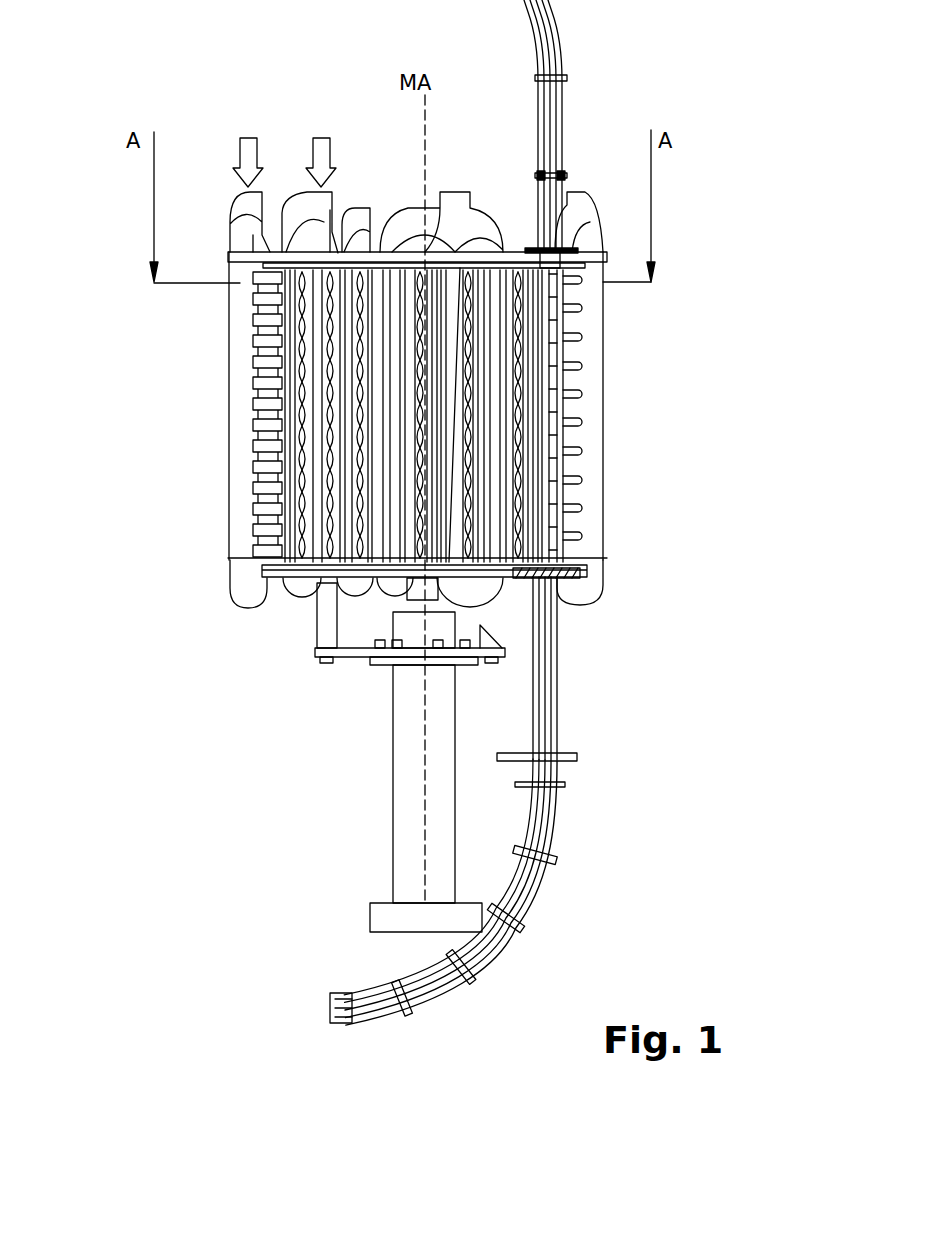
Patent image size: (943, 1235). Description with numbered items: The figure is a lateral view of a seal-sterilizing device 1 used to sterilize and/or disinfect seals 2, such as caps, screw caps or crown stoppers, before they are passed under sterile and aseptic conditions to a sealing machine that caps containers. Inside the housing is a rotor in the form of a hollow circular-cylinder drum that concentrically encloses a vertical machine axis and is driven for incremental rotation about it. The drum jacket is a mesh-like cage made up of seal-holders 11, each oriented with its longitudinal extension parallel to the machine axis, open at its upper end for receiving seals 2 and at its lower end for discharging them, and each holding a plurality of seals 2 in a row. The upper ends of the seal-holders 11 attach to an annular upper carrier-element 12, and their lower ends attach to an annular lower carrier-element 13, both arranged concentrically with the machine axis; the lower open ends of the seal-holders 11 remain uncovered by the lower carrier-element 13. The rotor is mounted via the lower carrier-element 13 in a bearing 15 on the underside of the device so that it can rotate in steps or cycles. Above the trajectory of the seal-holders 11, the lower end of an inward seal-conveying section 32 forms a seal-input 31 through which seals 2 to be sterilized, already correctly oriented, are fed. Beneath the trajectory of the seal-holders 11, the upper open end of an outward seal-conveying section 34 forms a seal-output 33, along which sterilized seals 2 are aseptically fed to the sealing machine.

The seal-sterilizing device 1 is at (616, 97).
The seals 2 is at (400, 562).
The seal-holder 11 is at (400, 563).
The upper carrier-element 12 is at (268, 265).
The lower carrier-element 13 is at (265, 576).
The bearing 15 is at (469, 628).
The seal-input 31 is at (540, 235).
The inward seal-conveying section 32 is at (562, 122).
The seal-output 33 is at (551, 585).
The outward seal-conveying section 34 is at (557, 720).